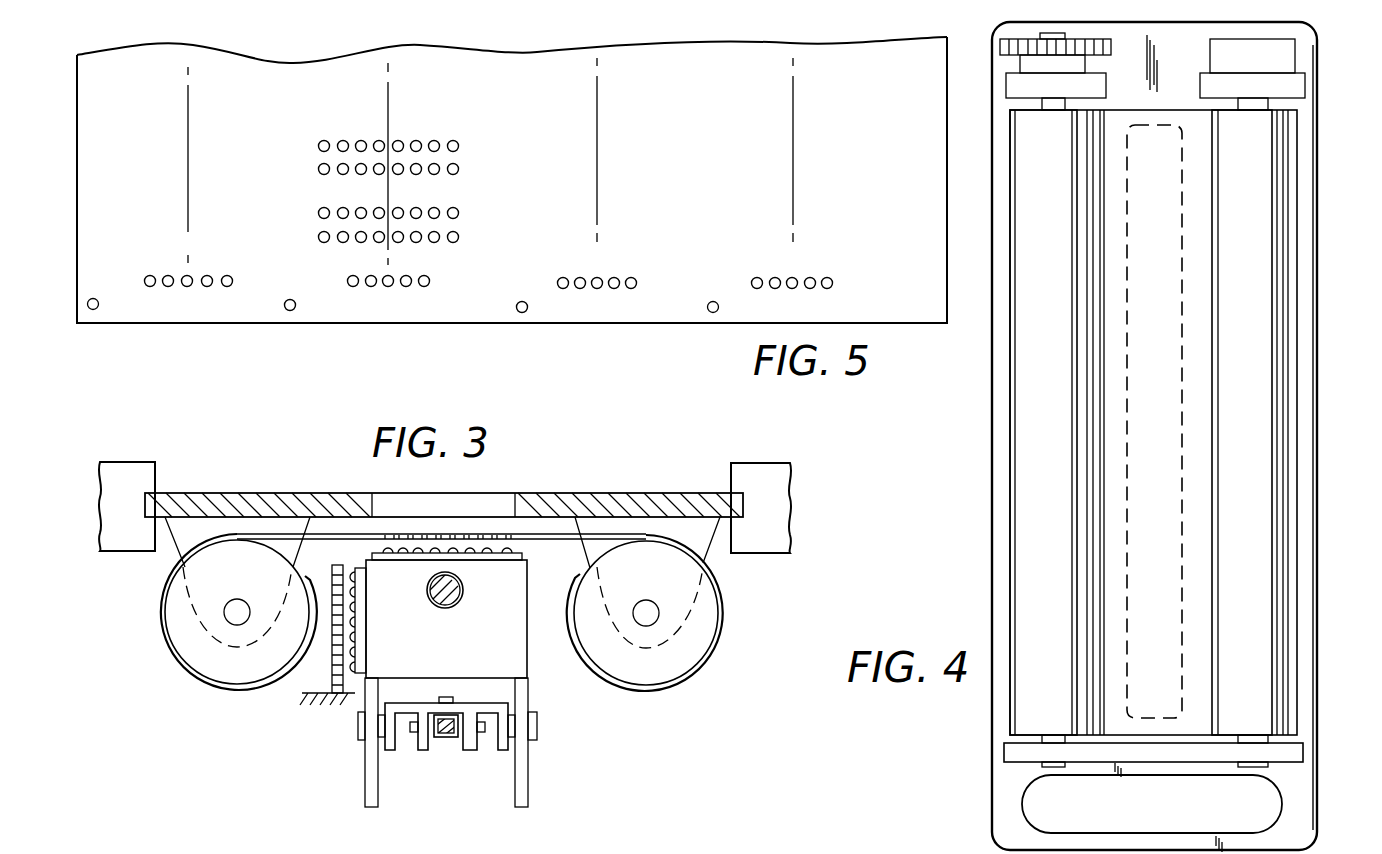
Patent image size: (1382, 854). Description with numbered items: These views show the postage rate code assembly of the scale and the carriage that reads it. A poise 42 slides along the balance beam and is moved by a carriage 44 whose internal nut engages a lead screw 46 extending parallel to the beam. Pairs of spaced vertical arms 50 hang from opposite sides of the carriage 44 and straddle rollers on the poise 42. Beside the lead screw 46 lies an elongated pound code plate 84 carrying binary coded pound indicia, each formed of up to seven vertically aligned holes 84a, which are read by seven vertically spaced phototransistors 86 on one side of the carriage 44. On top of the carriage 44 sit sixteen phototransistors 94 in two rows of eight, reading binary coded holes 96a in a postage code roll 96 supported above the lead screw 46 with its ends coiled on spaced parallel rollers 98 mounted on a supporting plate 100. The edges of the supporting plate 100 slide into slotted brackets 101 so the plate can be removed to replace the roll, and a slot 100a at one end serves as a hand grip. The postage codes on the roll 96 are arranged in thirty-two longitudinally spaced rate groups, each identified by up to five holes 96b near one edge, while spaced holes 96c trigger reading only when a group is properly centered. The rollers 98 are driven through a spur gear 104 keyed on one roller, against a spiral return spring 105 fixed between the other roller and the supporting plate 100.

In FIG. 3, the poise 42 is at (503, 752).
In FIG. 3, the carriage 44 is at (527, 655).
In FIG. 3, the lead screw 46 is at (463, 587).
In FIG. 3, the vertical arms 50 is at (583, 728).
In FIG. 3, the pound code plate 84 is at (340, 567).
In FIG. 3, the holes 84a is at (332, 656).
In FIG. 3, the phototransistors 86 is at (366, 612).
In FIG. 3, the phototransistors 94 is at (424, 563).
In FIG. 5, the postage code roll 96 is at (440, 323).
In FIG. 3, the postage code roll 96 is at (557, 542).
In FIG. 4, the postage code roll 96 is at (1113, 111).
In FIG. 5, the binary coded holes 96a is at (418, 208).
In FIG. 5, the binary coded holes 96b is at (618, 264).
In FIG. 5, the holes 96c is at (509, 292).
In FIG. 3, the rollers 98 is at (745, 627).
In FIG. 4, the rollers 98 is at (1335, 382).
In FIG. 3, the supporting plate 100 is at (552, 494).
In FIG. 4, the supporting plate 100 is at (1318, 222).
In FIG. 4, the slot 100a is at (1030, 808).
In FIG. 3, the slotted brackets 101 is at (743, 462).
In FIG. 4, the spur gear 104 is at (1111, 46).
In FIG. 4, the spiral return spring 105 is at (1210, 61).